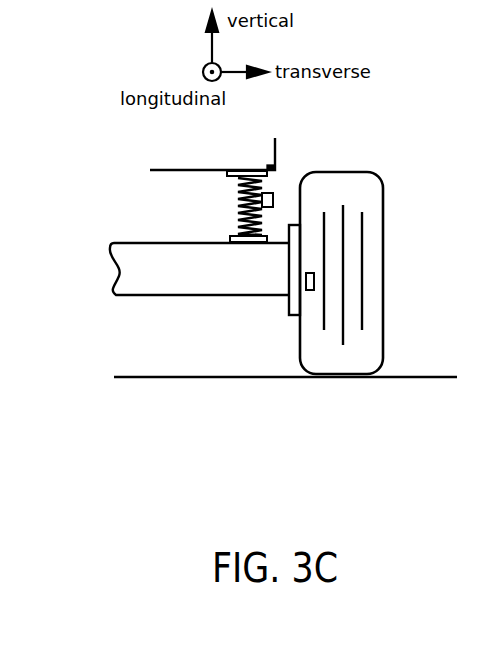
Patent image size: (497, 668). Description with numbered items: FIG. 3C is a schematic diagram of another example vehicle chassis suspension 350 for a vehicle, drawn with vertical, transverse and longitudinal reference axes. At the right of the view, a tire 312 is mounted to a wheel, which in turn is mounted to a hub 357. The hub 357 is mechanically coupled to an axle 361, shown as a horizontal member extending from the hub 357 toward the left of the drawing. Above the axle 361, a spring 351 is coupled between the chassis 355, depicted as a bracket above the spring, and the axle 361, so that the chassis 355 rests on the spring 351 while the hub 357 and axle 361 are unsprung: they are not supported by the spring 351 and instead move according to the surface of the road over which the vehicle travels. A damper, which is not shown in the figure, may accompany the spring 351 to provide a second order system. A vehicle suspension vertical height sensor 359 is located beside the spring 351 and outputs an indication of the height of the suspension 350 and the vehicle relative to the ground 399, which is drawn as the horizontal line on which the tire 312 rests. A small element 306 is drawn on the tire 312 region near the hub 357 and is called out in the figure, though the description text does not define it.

The vehicle chassis suspension 350 is at (92, 150).
The chassis 355 is at (277, 149).
The spring 351 is at (236, 200).
The vehicle suspension vertical height sensor 359 is at (270, 194).
The axle 361 is at (183, 297).
The hub 357 is at (291, 317).
The tire 312 is at (384, 198).
The sensor 306 is at (310, 290).
The ground 399 is at (166, 378).